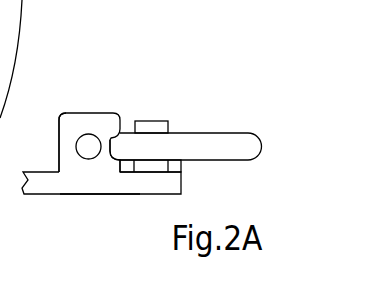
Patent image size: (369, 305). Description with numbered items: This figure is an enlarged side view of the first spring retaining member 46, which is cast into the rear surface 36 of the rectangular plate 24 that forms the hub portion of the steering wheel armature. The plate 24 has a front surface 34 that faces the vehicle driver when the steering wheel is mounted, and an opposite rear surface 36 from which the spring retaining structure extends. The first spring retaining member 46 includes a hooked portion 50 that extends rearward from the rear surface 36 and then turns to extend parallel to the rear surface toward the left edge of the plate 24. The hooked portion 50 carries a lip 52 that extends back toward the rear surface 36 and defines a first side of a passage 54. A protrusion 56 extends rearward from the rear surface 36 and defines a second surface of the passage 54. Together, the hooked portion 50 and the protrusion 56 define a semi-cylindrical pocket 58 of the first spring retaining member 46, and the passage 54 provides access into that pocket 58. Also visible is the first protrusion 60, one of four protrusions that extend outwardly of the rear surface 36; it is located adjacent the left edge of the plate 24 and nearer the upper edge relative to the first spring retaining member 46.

The plate 24 is at (67, 207).
The front surface 34 is at (87, 195).
The rear surface 36 is at (160, 165).
The first spring retaining member 46 is at (104, 86).
The hooked portion 50 is at (93, 123).
The lip 52 is at (122, 117).
The passage 54 is at (109, 147).
The protrusion 56 is at (112, 155).
The semi-cylindrical pocket 58 is at (80, 134).
The first protrusion 60 is at (160, 127).